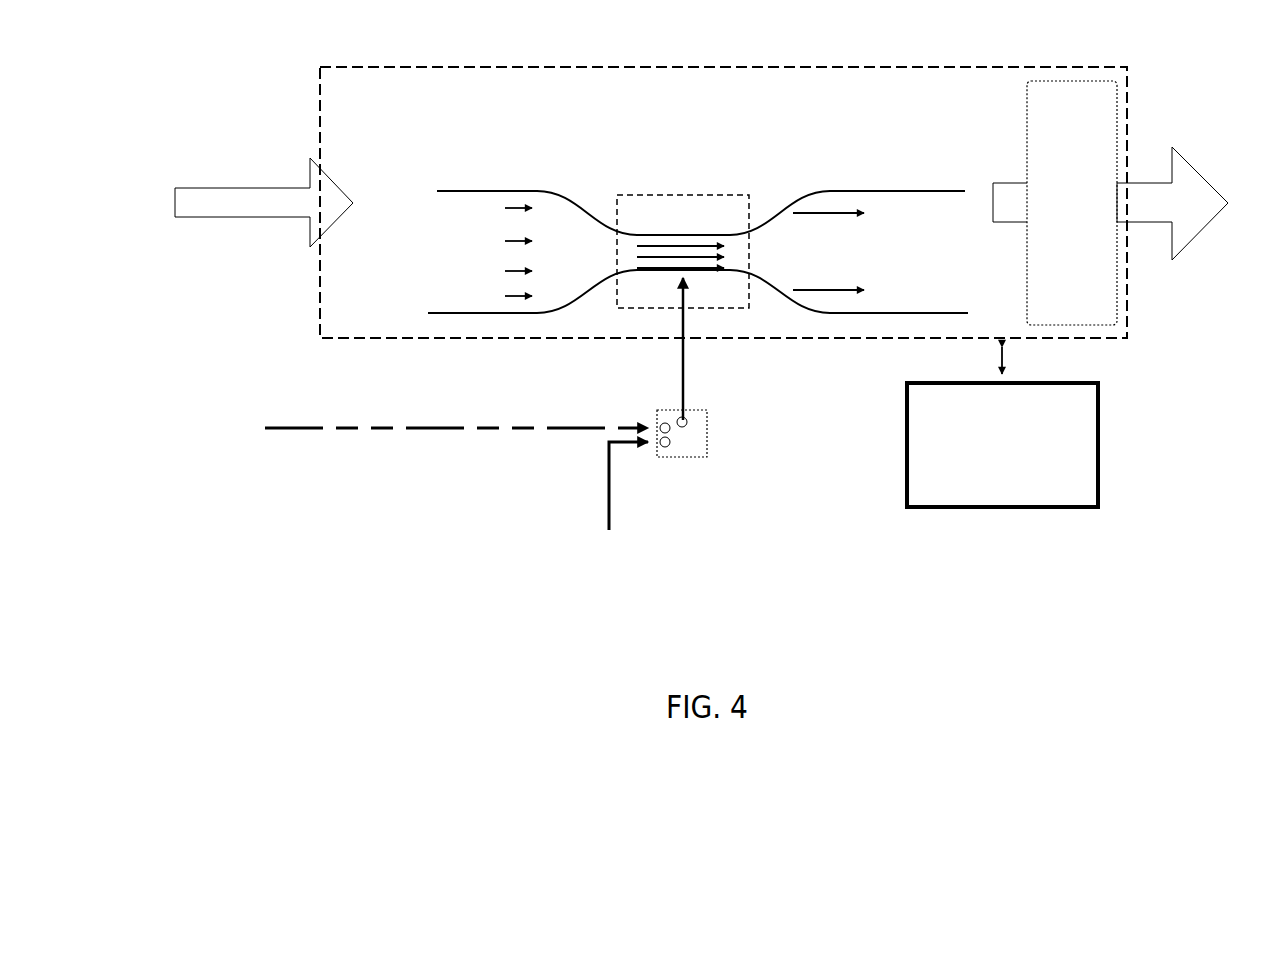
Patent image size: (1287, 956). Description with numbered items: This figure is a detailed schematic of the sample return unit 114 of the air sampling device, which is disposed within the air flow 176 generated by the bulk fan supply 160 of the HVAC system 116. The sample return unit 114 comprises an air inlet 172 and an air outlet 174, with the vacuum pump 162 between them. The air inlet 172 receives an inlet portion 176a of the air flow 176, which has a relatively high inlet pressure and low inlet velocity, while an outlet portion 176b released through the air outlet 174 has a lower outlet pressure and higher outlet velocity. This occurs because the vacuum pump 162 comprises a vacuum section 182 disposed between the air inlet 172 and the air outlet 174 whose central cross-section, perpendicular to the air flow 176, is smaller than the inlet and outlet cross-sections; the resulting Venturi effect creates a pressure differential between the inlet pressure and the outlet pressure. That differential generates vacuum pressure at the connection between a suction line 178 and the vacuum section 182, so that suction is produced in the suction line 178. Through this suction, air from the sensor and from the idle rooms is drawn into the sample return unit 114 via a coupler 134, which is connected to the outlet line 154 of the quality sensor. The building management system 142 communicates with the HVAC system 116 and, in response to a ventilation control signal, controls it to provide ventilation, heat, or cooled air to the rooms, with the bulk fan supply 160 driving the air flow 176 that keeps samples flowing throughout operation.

The sample return unit 114 is at (562, 92).
The HVAC system 116 is at (723, 111).
The air inlet 172 is at (478, 189).
The air outlet 174 is at (892, 190).
The air flow 176 is at (701, 203).
The inlet portion 176a is at (483, 251).
The outlet portion 176b is at (878, 251).
The vacuum pump 162 is at (683, 251).
The bulk fan supply 160 is at (1073, 203).
The building management system 142 is at (1002, 427).
The vacuum section 182 is at (662, 272).
The suction line 178 is at (684, 389).
The coupler 134 is at (693, 445).
The outlet line 154 is at (426, 430).